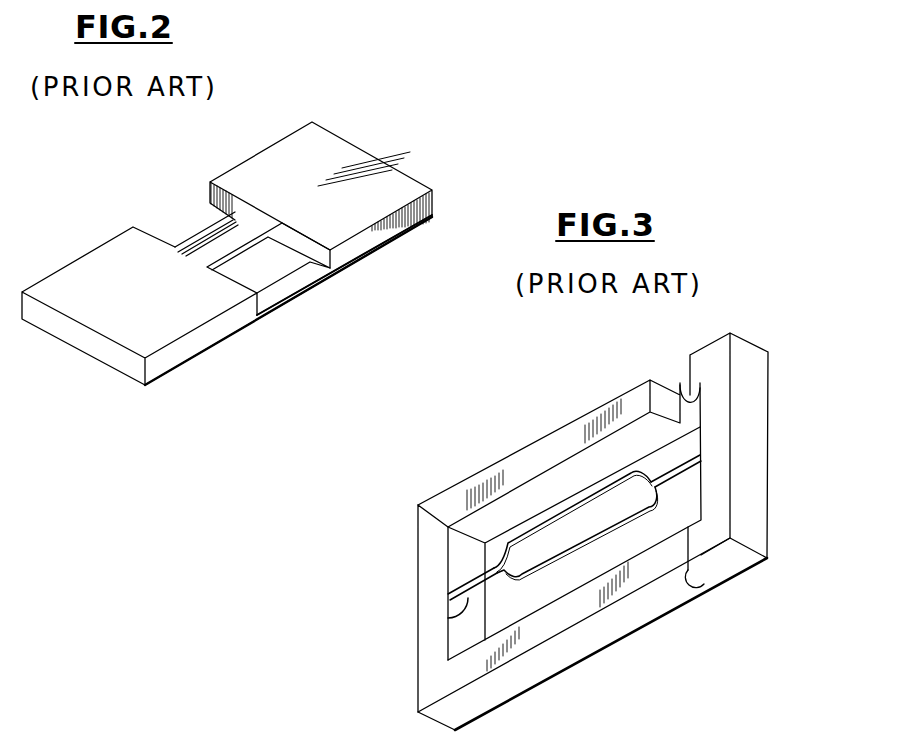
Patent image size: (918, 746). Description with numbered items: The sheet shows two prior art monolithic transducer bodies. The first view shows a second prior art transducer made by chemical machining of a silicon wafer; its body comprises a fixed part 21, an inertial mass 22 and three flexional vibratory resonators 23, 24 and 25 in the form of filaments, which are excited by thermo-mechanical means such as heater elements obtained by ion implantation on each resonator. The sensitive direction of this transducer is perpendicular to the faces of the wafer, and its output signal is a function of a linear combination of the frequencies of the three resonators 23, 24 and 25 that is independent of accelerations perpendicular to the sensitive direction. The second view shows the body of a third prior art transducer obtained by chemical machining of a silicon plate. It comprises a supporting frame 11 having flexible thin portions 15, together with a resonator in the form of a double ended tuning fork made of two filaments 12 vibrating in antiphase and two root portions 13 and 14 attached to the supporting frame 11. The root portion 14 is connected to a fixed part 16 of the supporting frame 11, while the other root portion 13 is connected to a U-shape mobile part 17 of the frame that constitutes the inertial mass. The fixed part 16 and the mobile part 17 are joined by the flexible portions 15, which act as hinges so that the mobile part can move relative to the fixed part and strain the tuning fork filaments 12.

In FIG. 3, the supporting frame 11 is at (598, 627).
In FIG. 3, the filaments 12 is at (580, 543).
In FIG. 3, the root portion 13 is at (447, 622).
In FIG. 3, the root portion 14 is at (680, 470).
In FIG. 3, the flexible thin portions 15 is at (680, 407).
In FIG. 3, the fixed part 16 is at (748, 420).
In FIG. 3, the U-shape mobile part 17 is at (428, 665).
In FIG. 2, the fixed part 21 is at (98, 272).
In FIG. 2, the inertial mass 22 is at (290, 150).
In FIG. 2, the flexional vibratory resonator 23 is at (217, 243).
In FIG. 2, the flexional vibratory resonator 24 is at (175, 232).
In FIG. 2, the flexional vibratory resonator 25 is at (287, 285).